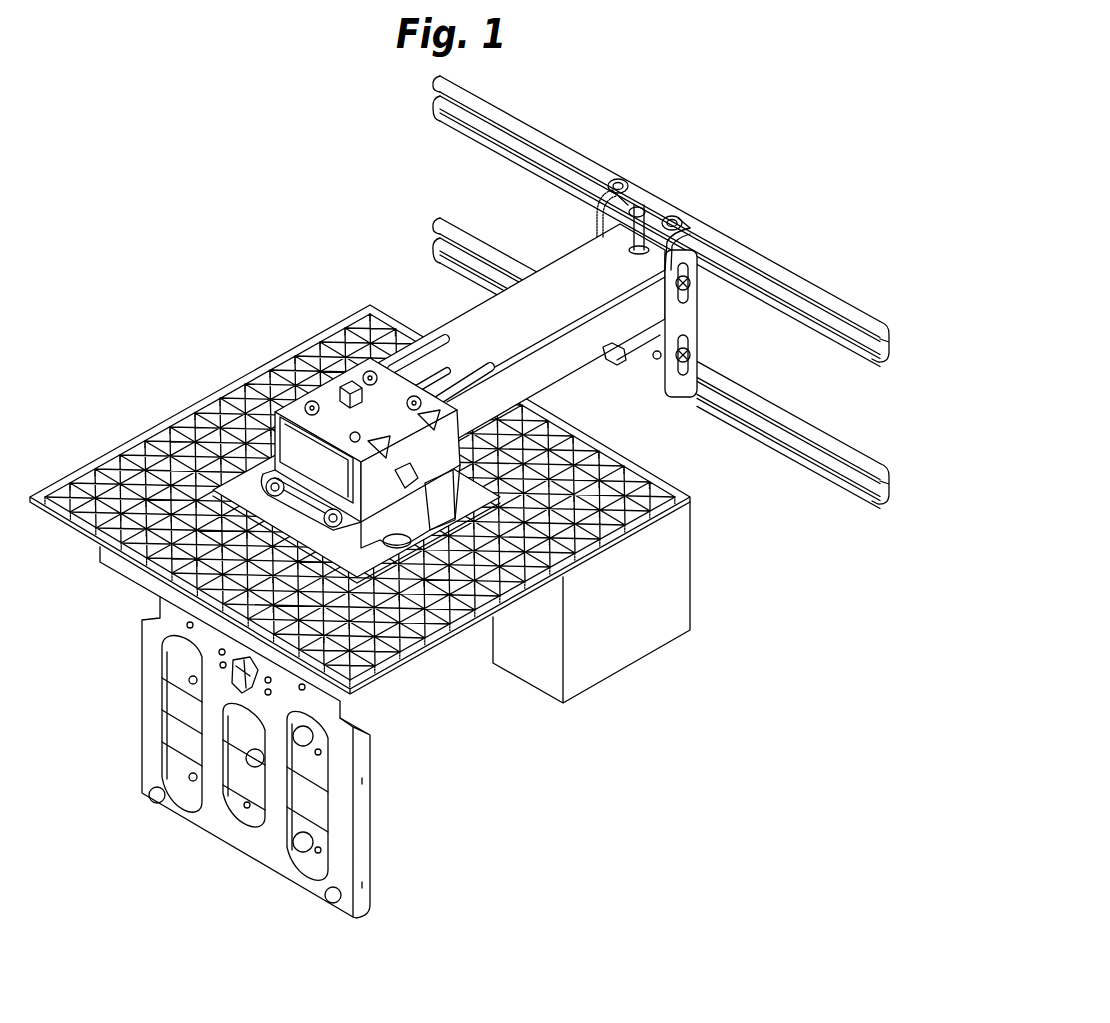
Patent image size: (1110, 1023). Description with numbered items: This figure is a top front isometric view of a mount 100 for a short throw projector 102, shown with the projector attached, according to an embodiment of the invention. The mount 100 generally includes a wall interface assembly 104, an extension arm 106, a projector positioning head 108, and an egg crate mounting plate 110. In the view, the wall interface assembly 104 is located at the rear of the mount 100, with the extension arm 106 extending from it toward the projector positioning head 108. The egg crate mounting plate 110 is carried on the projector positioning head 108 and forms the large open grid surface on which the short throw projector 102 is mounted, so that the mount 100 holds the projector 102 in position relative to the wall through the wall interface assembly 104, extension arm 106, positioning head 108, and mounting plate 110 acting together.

The mount 100 is at (858, 288).
The short throw projector 102 is at (642, 647).
The wall interface assembly 104 is at (643, 202).
The extension arm 106 is at (450, 320).
The projector positioning head 108 is at (320, 356).
The egg crate mounting plate 110 is at (127, 450).